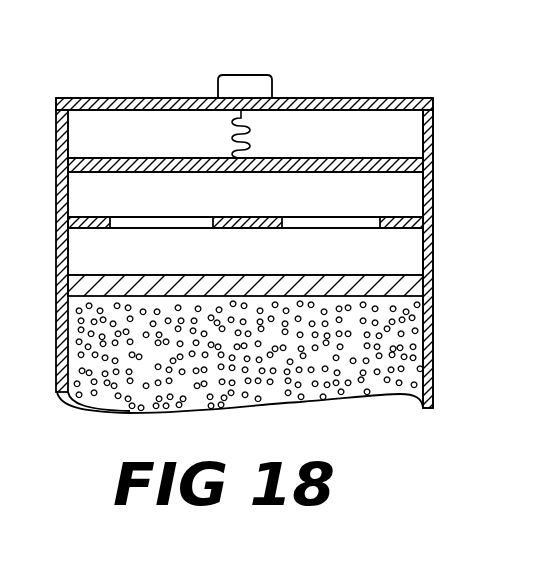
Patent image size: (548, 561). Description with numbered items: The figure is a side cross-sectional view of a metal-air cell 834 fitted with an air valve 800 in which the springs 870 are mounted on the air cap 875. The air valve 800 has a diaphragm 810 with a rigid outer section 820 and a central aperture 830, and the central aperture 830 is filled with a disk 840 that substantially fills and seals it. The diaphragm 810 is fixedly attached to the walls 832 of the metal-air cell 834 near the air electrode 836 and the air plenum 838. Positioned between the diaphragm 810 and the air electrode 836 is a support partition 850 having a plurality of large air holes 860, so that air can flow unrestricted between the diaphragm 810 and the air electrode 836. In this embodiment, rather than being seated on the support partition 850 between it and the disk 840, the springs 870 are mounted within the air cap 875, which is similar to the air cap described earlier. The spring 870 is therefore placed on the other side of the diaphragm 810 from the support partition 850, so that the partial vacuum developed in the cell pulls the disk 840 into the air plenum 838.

The air valve 800 is at (108, 70).
The air cap 875 is at (438, 106).
The diaphragm 810 is at (336, 158).
The rigid outer section 820 is at (129, 158).
The central aperture 830 is at (197, 160).
The walls 832 is at (423, 146).
The metal-air cell 834 is at (52, 384).
The air electrode 836 is at (307, 296).
The air plenum 838 is at (397, 266).
The disk 840 is at (202, 173).
The support partition 850 is at (84, 228).
The air holes 860 is at (169, 228).
The springs 870 is at (246, 158).